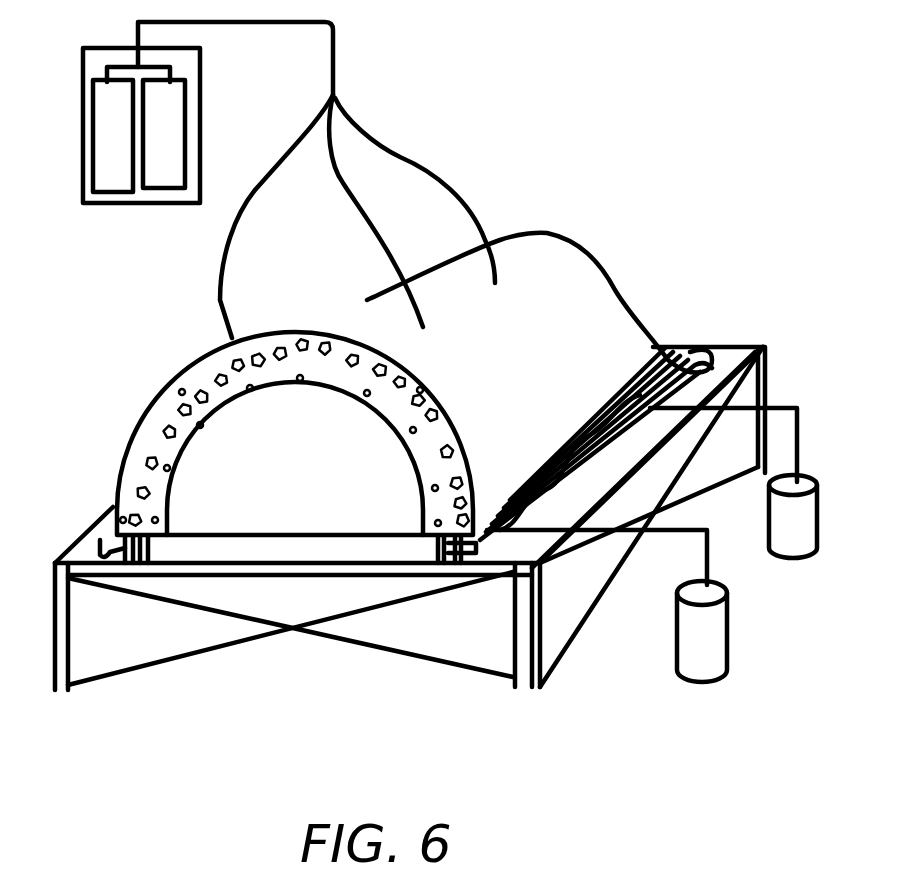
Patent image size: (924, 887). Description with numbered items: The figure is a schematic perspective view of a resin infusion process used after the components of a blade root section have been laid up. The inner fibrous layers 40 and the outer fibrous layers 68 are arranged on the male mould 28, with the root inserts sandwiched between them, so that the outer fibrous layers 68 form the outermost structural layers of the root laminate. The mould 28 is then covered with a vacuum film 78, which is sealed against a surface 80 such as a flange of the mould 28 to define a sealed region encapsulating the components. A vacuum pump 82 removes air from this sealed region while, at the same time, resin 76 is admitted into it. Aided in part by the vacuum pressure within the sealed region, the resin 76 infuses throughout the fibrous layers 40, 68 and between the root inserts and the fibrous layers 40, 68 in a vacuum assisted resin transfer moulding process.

The male mould 28 is at (288, 545).
The inner fibrous layers 40 is at (157, 550).
The outer fibrous layers 68 is at (93, 557).
The resin 76 is at (100, 167).
The vacuum film 78 is at (690, 363).
The surface 80 is at (720, 363).
The vacuum pump 82 is at (790, 540).